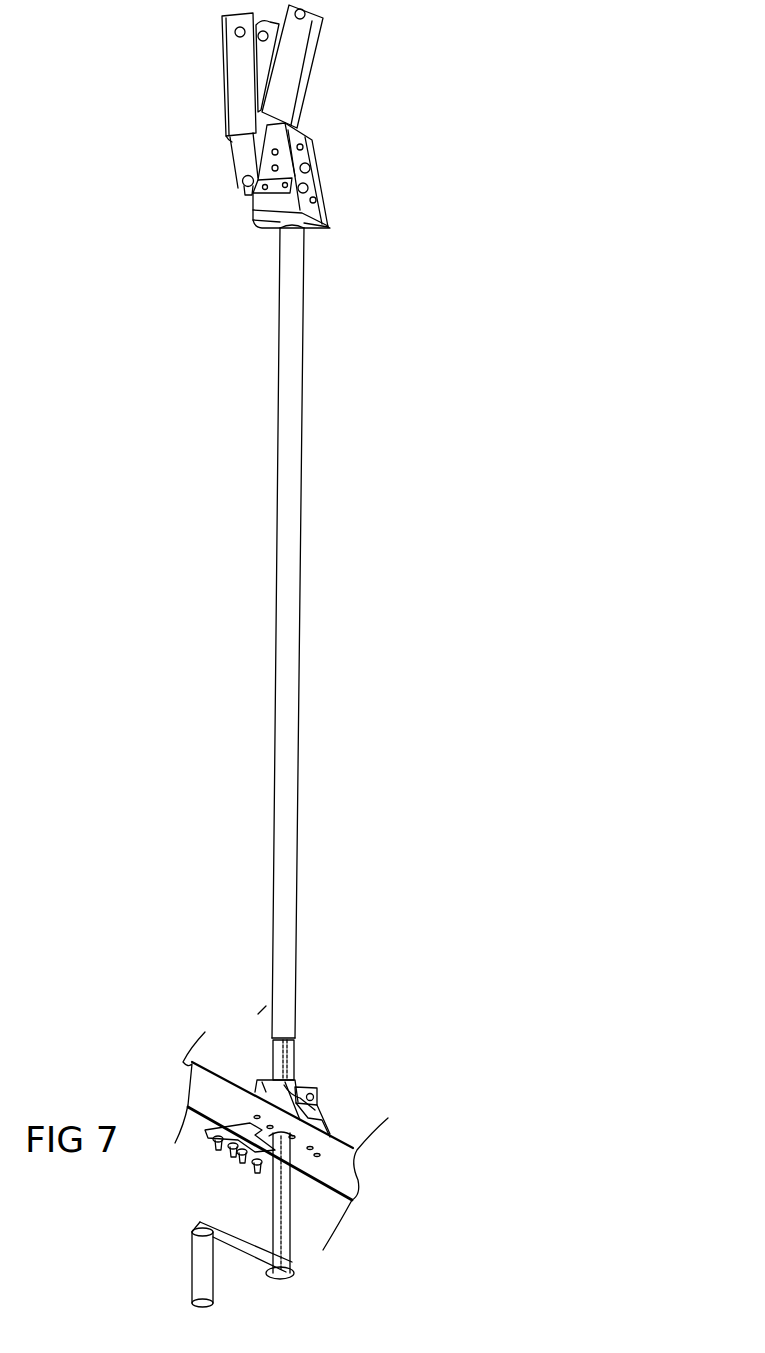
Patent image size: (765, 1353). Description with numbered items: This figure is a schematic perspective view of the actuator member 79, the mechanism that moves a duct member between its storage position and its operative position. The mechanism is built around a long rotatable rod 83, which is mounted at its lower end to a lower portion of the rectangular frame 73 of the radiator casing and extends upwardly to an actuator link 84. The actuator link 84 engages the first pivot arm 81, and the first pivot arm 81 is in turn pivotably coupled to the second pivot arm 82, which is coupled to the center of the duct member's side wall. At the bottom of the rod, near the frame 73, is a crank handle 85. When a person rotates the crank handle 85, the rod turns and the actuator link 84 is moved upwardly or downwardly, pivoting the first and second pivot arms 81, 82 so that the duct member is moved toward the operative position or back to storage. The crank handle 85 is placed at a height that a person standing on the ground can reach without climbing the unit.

The actuator member 79 is at (512, 625).
The first pivot arm 81 is at (243, 152).
The second pivot arm 82 is at (290, 62).
The rotatable rod 83 is at (297, 456).
The actuator link 84 is at (262, 208).
The rectangular frame 73 is at (350, 1172).
The crank handle 85 is at (192, 1263).